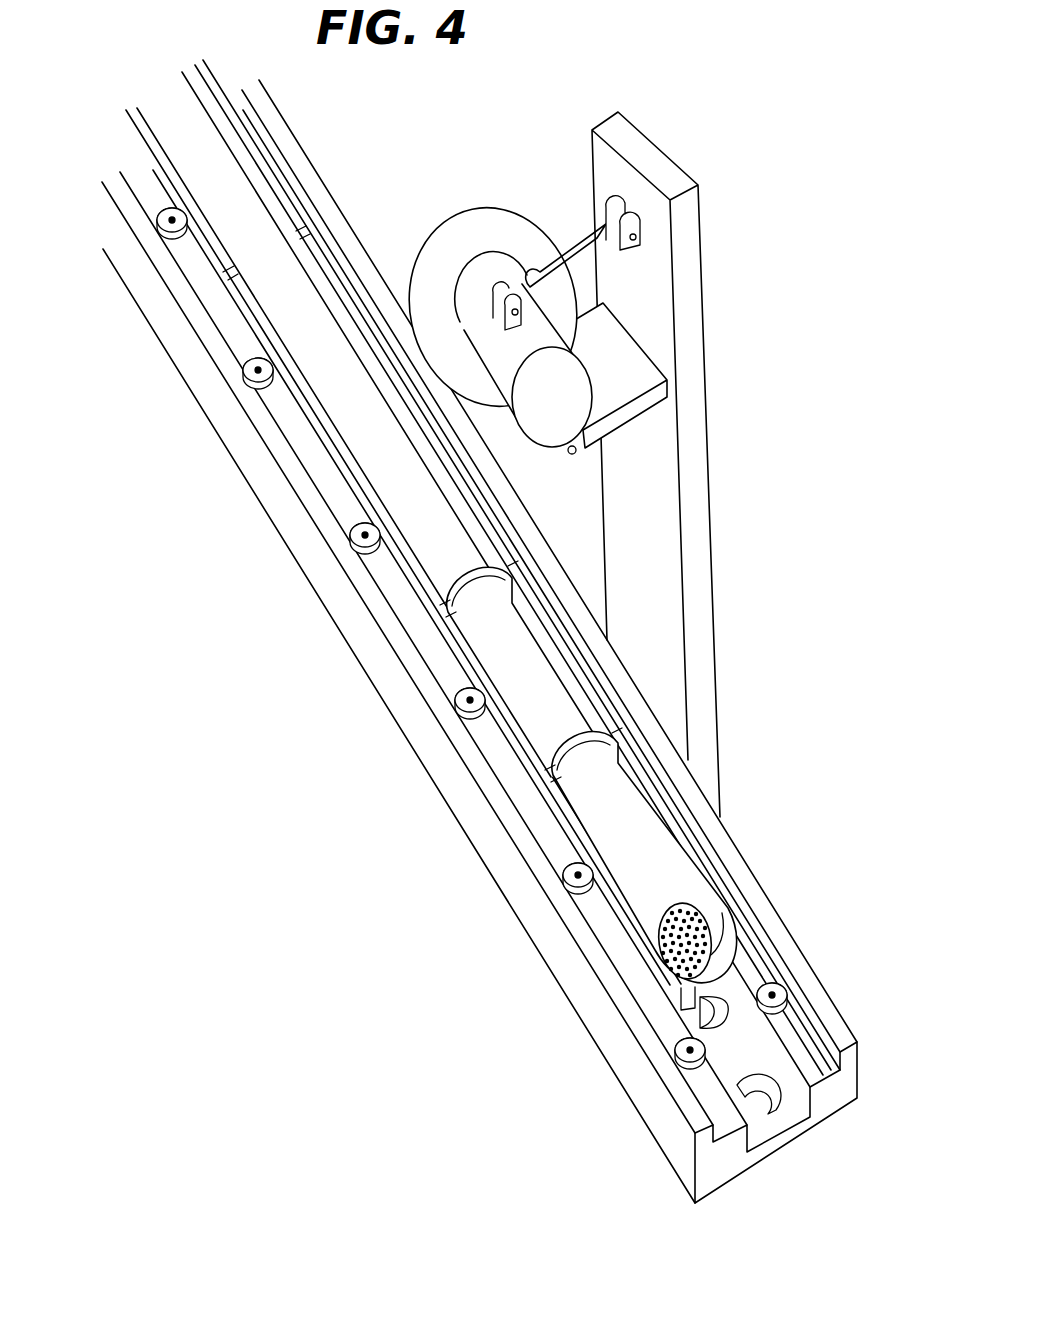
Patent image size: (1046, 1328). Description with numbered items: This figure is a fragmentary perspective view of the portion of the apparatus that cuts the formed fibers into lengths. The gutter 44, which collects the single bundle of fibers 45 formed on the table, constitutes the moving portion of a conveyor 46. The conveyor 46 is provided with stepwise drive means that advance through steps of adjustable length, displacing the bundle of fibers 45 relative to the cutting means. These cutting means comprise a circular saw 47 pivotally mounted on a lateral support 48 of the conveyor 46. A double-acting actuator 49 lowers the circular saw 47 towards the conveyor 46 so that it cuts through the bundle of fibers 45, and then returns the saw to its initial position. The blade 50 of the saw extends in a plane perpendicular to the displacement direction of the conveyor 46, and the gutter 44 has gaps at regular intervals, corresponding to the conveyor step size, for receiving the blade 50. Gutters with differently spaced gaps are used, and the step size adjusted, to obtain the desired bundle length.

The gutter 44 is at (718, 880).
The bundle of fibers 45 is at (268, 295).
The conveyor 46 is at (477, 631).
The circular saw 47 is at (652, 326).
The lateral support 48 is at (692, 468).
The double-acting actuator 49 is at (560, 215).
The blade 50 is at (443, 253).